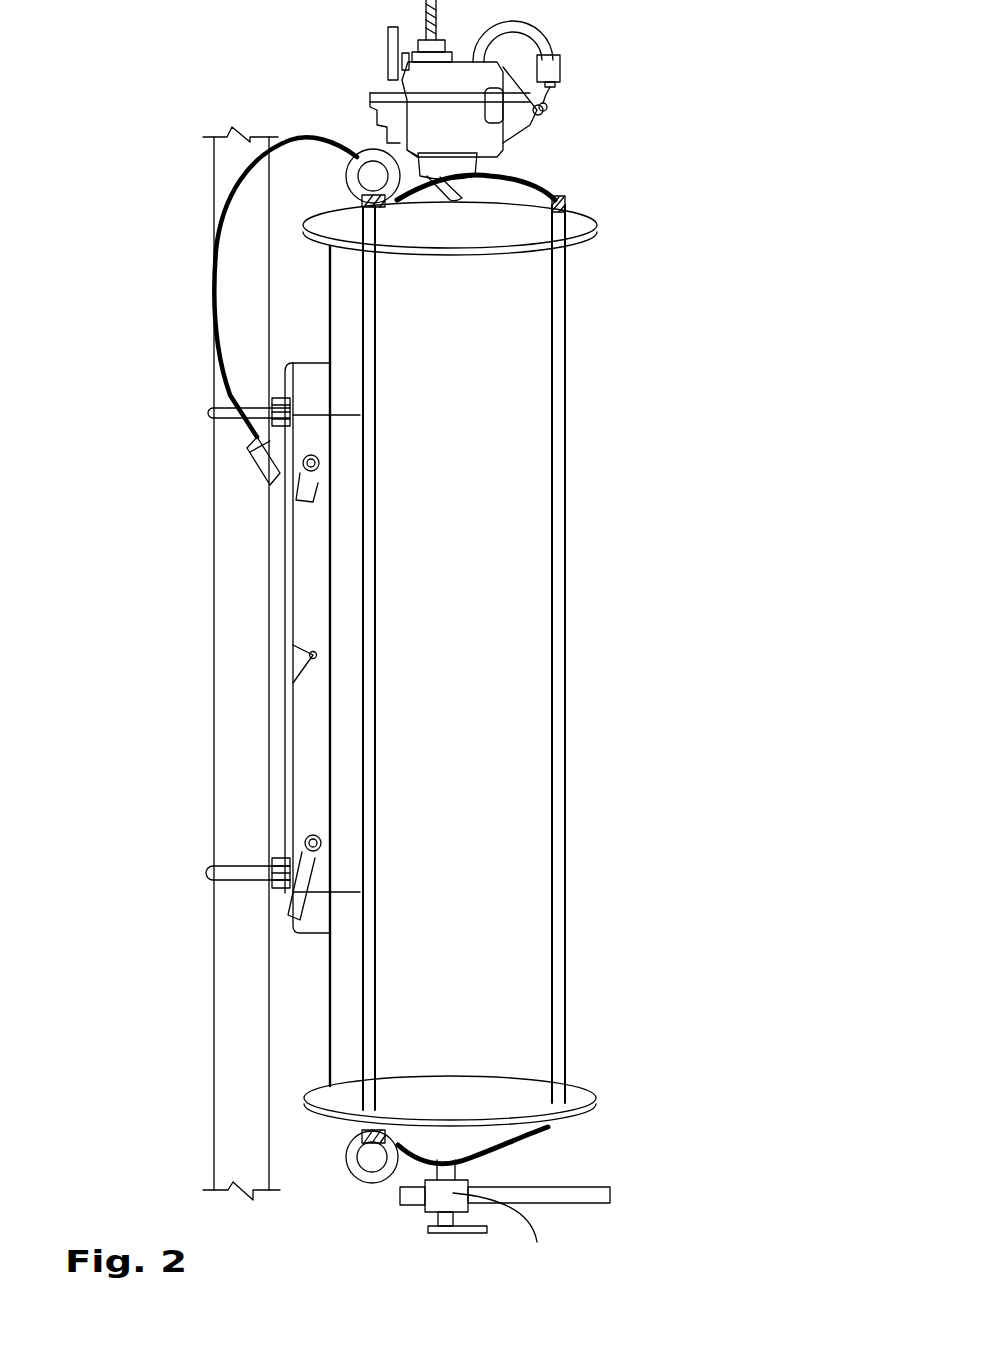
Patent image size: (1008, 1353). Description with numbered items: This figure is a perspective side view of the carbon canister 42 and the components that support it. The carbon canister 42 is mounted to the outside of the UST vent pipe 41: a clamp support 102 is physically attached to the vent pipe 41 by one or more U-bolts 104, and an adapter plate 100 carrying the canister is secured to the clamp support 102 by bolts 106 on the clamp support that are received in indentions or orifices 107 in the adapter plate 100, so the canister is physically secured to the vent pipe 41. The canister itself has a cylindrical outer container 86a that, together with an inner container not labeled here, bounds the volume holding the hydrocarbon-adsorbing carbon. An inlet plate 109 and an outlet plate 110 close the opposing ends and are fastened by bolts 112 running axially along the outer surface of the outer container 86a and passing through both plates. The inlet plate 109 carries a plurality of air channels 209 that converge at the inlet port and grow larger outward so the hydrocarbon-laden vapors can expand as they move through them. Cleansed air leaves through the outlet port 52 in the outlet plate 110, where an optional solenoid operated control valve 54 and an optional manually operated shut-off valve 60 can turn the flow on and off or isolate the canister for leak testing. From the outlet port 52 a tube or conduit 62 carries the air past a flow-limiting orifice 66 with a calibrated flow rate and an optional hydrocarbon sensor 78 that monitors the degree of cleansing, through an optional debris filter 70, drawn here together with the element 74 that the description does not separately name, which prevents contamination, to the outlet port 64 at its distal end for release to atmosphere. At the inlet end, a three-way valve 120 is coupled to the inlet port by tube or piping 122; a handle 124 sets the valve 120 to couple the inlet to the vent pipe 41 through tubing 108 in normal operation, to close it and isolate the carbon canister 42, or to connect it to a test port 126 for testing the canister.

The vent pipe 41 is at (214, 993).
The carbon canister 42 is at (484, 652).
The outlet port 52 is at (430, 181).
The solenoid operated control valve 54 is at (386, 78).
The manually operated shut-off valve 60 is at (386, 78).
The flow-limiting orifice 66 is at (386, 78).
The hydrocarbon sensor 78 is at (400, 93).
The tube or conduit 62 is at (548, 29).
The outlet port 64 is at (552, 93).
The debris filter 70 is at (600, 64).
The sensor housing 74 is at (562, 68).
The outer container 86a is at (520, 870).
The adapter plate 100 is at (246, 638).
The clamp support 102 is at (310, 384).
The U-bolts 104 is at (210, 412).
The bolts 106 is at (302, 465).
The indentions or orifices 107 is at (313, 495).
The tubing 108 is at (611, 1194).
The inlet plate 109 is at (598, 1094).
The outlet plate 110 is at (595, 249).
The bolts 112 is at (566, 317).
The three-way valve 120 is at (503, 1234).
The tube or piping 122 is at (447, 1173).
The handle 124 is at (470, 1234).
The test port 126 is at (400, 1196).
The air channels 209 is at (528, 192).